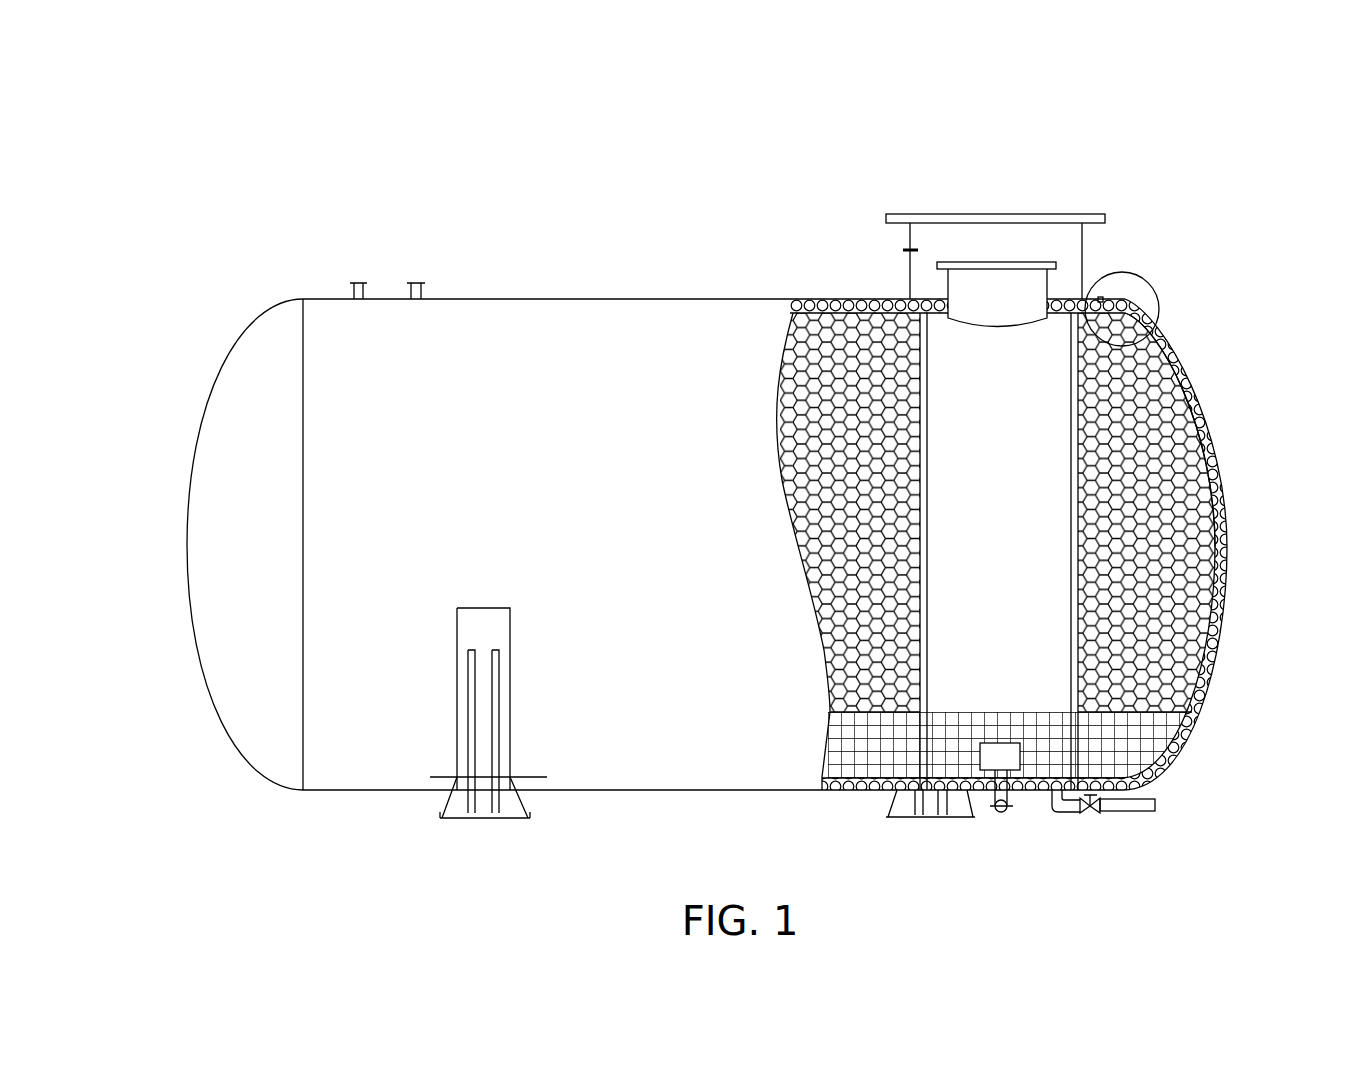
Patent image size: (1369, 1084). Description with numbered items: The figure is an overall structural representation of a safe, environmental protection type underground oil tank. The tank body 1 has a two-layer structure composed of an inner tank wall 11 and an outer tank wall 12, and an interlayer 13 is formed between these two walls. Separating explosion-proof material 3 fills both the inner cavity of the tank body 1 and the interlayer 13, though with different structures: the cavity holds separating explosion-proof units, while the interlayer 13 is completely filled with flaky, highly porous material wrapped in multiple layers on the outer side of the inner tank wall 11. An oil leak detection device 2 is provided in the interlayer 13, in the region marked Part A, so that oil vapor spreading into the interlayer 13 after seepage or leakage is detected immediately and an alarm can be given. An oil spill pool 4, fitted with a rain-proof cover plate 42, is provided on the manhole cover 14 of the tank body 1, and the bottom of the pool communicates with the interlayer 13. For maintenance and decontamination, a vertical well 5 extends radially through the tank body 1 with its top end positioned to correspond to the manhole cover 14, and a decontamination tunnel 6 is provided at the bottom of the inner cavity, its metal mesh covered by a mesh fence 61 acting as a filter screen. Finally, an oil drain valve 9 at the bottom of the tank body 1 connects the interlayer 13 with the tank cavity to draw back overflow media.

The tank body 1 is at (205, 405).
The inner tank wall 11 is at (790, 299).
The outer tank wall 12 is at (867, 299).
The oil leak detection device 2 is at (905, 249).
The rain-proof cover plate 42 is at (987, 215).
The oil spill pool 4 is at (1040, 230).
The manhole cover 14 is at (1037, 300).
The Part A is at (1140, 273).
The interlayer 13 is at (1170, 346).
The separating explosion-proof material 3 is at (1175, 423).
The vertical well 5 is at (1032, 588).
The decontamination tunnel 6 is at (1167, 750).
The mesh fence 61 is at (1075, 713).
The oil drain valve 9 is at (1090, 800).